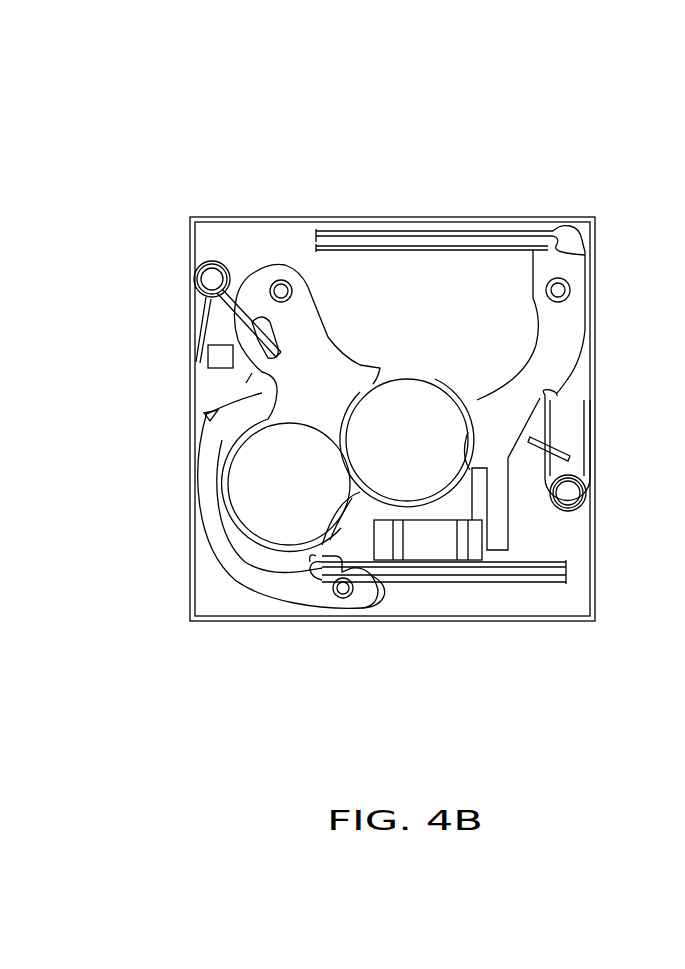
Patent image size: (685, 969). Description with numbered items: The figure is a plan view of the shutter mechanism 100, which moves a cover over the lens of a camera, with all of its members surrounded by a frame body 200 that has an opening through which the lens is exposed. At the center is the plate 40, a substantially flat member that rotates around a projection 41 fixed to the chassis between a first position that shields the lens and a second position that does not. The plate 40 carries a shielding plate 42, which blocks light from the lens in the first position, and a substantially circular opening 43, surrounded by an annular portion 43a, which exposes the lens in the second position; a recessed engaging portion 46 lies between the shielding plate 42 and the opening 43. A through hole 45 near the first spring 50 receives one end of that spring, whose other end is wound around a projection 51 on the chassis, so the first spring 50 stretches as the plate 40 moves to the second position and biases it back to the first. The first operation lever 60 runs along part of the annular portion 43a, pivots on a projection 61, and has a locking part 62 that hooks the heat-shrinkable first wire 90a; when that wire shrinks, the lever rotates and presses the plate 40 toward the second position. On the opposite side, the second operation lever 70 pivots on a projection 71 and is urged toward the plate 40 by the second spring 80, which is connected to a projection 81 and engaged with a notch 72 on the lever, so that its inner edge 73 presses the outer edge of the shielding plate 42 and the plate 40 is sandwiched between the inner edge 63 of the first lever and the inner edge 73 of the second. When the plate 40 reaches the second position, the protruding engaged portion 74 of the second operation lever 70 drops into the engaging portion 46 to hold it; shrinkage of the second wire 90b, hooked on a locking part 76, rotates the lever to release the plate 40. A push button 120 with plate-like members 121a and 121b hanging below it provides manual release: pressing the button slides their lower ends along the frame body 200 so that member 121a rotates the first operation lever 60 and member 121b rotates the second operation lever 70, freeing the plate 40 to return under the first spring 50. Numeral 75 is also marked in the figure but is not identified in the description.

The shutter mechanism 100 is at (159, 147).
The frame body 200 is at (600, 570).
The plate 40 is at (318, 320).
The projection 41 is at (279, 281).
The shielding plate 42 is at (398, 440).
The opening 43 is at (290, 428).
The annular portion 43a is at (235, 516).
The through hole 45 is at (252, 337).
The engaging portion 46 is at (238, 590).
The first spring 50 is at (212, 338).
The projection 51 is at (212, 277).
The first operation lever 60 is at (210, 535).
The projection 61 is at (328, 585).
The locking part 62 is at (325, 580).
The inner edge 63 is at (228, 562).
The second operation lever 70 is at (518, 433).
The projection 71 is at (562, 287).
The notch 72 is at (578, 395).
The inner edge 73 is at (467, 467).
The engaged portion 74 is at (474, 402).
The guide curve 75 is at (536, 358).
The locking part 76 is at (556, 246).
The second spring 80 is at (583, 448).
The projection 81 is at (594, 518).
The first wire 90a is at (410, 575).
The second wire 90b is at (440, 234).
The push button 120 is at (436, 540).
The plate-like member 121a is at (390, 548).
The plate-like member 121b is at (465, 548).